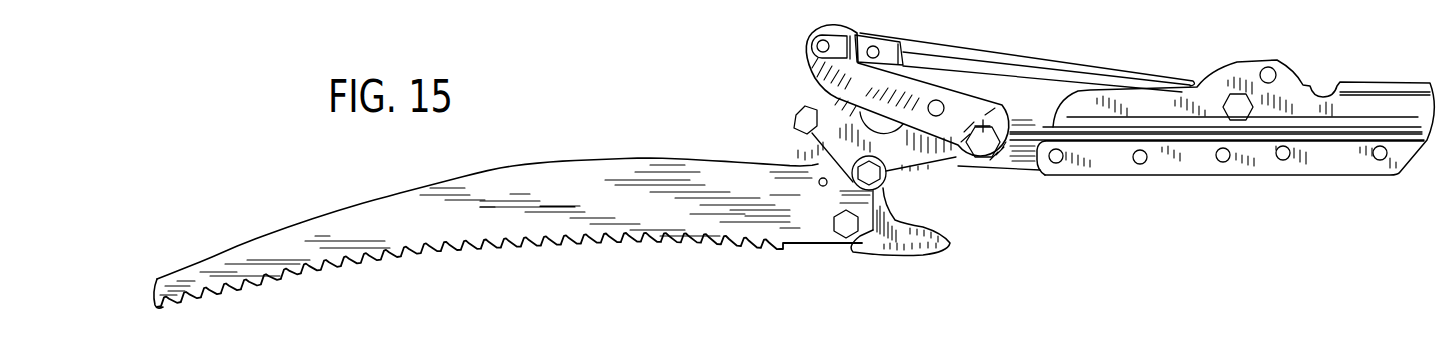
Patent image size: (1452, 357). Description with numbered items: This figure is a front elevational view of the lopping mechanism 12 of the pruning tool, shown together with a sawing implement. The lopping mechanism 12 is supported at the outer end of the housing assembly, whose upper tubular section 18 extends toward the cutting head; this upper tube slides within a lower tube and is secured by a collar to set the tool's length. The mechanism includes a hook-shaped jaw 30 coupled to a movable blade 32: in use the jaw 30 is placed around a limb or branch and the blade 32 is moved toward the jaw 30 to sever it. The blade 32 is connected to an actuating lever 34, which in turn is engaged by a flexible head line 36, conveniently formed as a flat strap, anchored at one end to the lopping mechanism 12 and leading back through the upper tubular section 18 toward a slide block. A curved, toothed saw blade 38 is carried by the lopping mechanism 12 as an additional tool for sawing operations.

The lopping mechanism 12 is at (703, 117).
The upper tubular section 18 is at (1422, 152).
The hook-shaped jaw 30 is at (937, 255).
The movable blade 32 is at (835, 153).
The actuating lever 34 is at (823, 97).
The flexible head line 36 is at (1043, 60).
The saw blade 38 is at (348, 221).